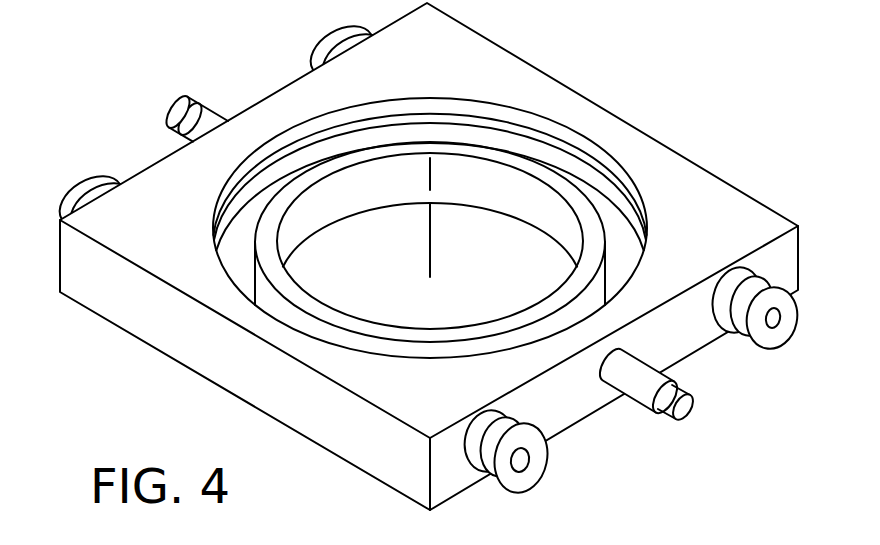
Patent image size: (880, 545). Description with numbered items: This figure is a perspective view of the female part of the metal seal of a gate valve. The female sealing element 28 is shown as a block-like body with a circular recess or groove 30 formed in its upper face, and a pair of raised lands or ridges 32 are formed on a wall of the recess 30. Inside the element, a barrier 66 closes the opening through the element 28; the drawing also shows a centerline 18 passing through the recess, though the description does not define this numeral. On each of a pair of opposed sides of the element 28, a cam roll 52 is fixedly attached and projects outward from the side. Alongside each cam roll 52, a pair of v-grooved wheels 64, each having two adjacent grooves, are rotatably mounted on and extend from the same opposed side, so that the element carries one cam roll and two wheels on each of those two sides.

The axis line 18 is at (432, 230).
The female sealing element 28 is at (241, 370).
The circular recess or groove 30 is at (535, 152).
The raised lands or ridges 32 is at (410, 116).
The cam roll 52 is at (186, 104).
The v-grooved wheels 64 is at (326, 50).
The barrier 66 is at (337, 271).